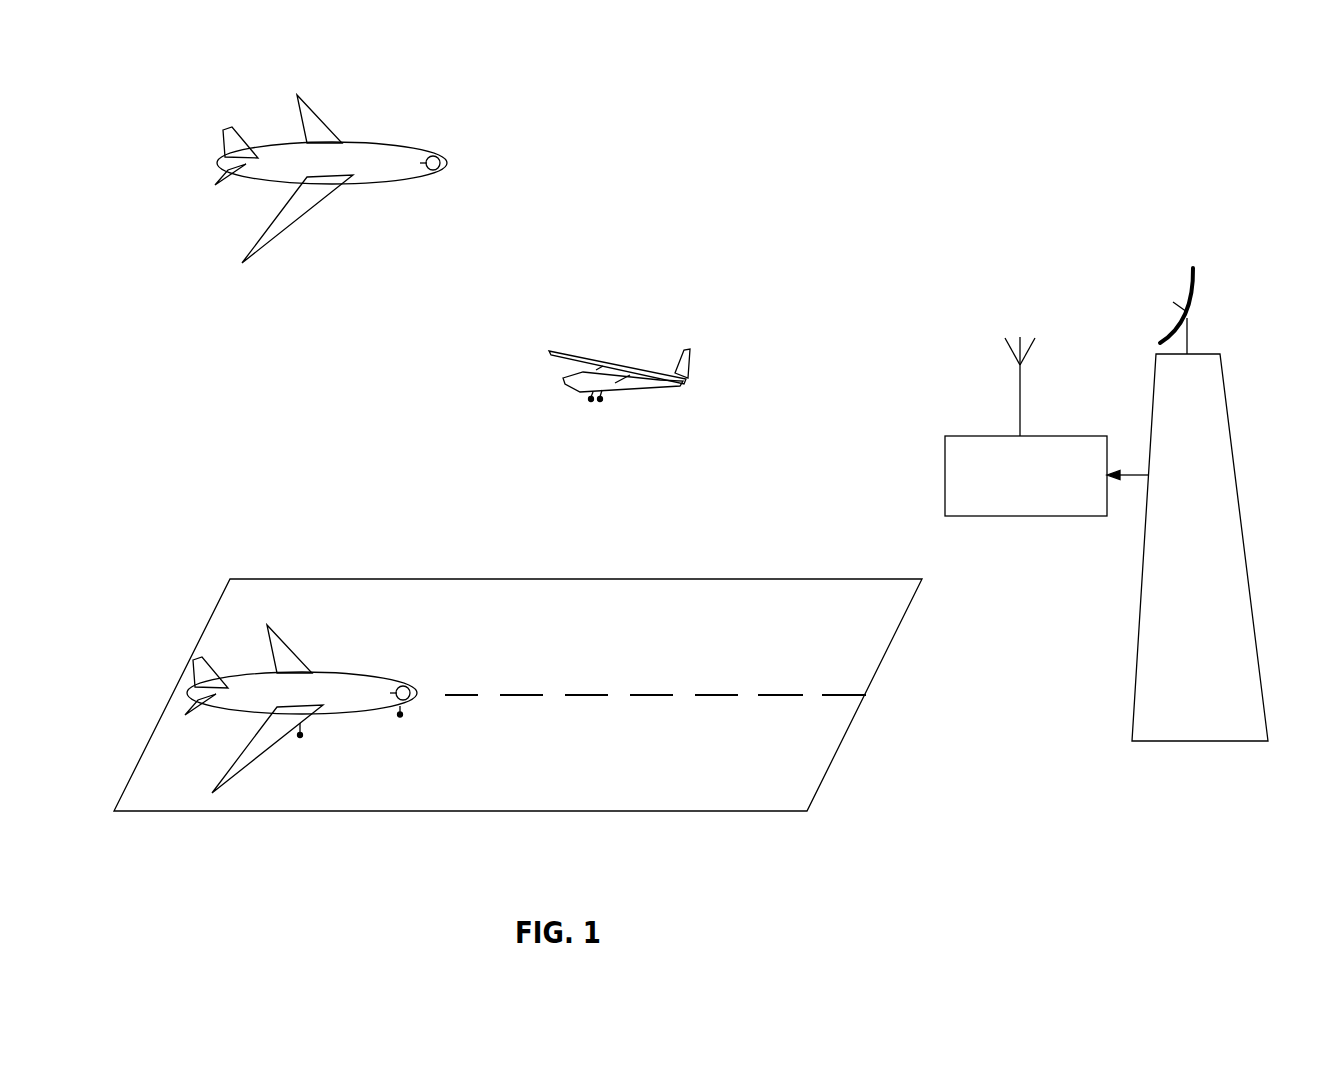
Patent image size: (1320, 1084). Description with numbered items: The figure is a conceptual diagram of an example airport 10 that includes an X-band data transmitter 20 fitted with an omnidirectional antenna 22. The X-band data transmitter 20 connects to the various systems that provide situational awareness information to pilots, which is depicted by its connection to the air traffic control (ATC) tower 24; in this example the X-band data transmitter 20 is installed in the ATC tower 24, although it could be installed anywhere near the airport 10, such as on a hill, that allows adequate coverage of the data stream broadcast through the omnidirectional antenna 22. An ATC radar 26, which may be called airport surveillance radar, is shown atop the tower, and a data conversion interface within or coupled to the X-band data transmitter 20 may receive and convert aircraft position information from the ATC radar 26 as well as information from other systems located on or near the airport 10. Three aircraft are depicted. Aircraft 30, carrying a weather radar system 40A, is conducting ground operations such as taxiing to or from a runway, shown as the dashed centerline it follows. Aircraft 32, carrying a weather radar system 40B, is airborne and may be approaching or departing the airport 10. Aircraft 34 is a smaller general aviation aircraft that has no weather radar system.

The airport 10 is at (858, 118).
The X-band data transmitter 20 is at (1026, 476).
The omnidirectional antenna 22 is at (996, 416).
The air traffic control (ATC) tower 24 is at (1187, 547).
The ATC radar 26 is at (1218, 296).
The aircraft 30 is at (287, 709).
The aircraft 32 is at (343, 179).
The aircraft 34 is at (661, 394).
The weather radar system 40A is at (397, 670).
The weather radar system 40B is at (448, 177).